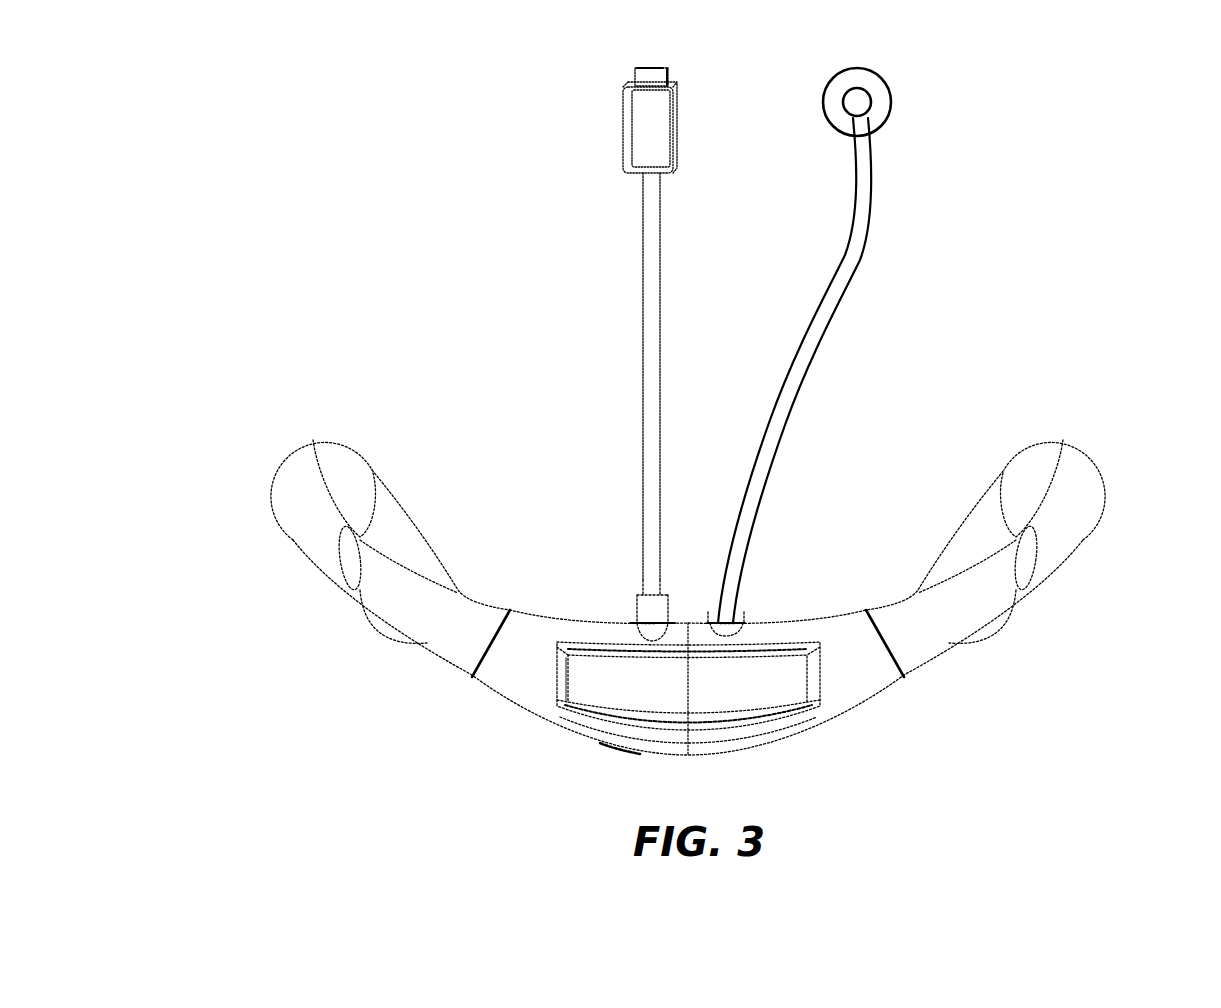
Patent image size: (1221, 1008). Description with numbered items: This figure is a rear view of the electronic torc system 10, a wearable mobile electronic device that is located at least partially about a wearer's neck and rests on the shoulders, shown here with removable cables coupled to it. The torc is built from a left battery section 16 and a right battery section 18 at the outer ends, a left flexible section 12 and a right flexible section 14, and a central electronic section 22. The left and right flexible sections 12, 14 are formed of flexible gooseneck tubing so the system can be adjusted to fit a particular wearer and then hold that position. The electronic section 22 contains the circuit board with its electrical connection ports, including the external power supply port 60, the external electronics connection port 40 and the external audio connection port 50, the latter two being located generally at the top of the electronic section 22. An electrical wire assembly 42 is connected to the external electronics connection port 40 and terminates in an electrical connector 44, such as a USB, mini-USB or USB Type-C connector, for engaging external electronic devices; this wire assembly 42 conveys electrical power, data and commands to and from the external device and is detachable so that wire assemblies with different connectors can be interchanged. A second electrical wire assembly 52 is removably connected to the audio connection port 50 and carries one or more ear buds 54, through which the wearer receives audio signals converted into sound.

The electronic torc system 10 is at (243, 497).
The left flexible section 12 is at (445, 648).
The right flexible section 14 is at (1097, 480).
The left battery section 16 is at (348, 592).
The right battery section 18 is at (1020, 615).
The electronic section 22 is at (837, 692).
The external electronics connection port 40 is at (636, 612).
The electrical wire assembly 42 is at (647, 423).
The electrical connector 44 is at (627, 103).
The external audio connection port 50 is at (728, 624).
The electrical wire assembly 52 is at (848, 278).
The ear bud 54 is at (885, 110).
The external power supply port 60 is at (622, 752).